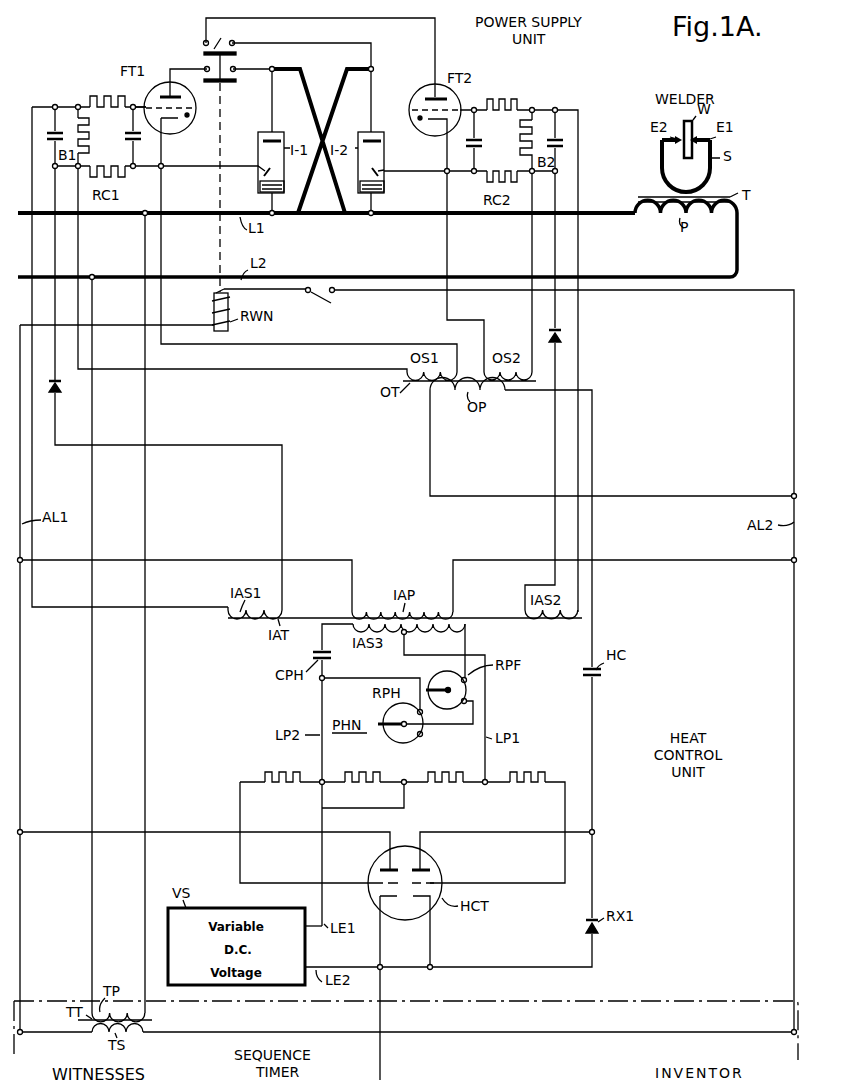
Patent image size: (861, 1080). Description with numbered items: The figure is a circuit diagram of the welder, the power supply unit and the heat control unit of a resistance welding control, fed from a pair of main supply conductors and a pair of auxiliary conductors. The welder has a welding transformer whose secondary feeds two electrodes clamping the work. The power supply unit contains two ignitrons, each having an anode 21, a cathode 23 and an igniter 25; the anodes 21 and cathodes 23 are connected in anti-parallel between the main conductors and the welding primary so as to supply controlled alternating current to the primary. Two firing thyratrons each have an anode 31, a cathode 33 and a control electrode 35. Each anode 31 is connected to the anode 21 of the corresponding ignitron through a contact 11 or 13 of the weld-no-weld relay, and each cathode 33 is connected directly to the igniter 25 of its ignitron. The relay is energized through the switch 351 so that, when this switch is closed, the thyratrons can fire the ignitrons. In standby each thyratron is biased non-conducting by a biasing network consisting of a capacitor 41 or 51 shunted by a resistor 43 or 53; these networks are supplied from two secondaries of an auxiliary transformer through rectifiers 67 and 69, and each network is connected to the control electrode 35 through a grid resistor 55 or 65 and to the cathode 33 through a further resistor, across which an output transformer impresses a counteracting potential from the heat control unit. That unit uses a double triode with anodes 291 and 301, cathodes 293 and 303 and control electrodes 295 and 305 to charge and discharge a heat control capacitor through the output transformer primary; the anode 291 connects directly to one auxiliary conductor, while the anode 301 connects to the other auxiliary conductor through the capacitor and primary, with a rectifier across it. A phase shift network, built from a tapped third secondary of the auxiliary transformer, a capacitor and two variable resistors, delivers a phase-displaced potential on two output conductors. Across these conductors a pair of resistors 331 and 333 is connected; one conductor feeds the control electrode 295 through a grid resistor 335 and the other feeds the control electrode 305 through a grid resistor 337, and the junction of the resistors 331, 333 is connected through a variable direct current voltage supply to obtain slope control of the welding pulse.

The contact of weld-no-weld relay 11 is at (214, 47).
The contact of weld-no-weld relay 13 is at (236, 80).
The ignitron anode 21 is at (265, 137).
The ignitron cathode 23 is at (260, 189).
The ignitron igniter 25 is at (262, 176).
The thyratron anode 31 is at (168, 94).
The thyratron cathode 33 is at (178, 122).
The thyratron control electrode 35 is at (181, 100).
The capacitor 41 is at (52, 130).
The resistor 43 is at (90, 145).
The capacitor 51 is at (556, 138).
The resistor 53 is at (520, 139).
The grid resistor 55 is at (90, 97).
The grid resistor 65 is at (513, 101).
The rectifier 67 is at (60, 388).
The rectifier 69 is at (562, 338).
The switch 351 is at (320, 300).
The anode of double triode 291 is at (383, 866).
The cathode of double triode 293 is at (378, 893).
The control electrode of double triode 295 is at (372, 880).
The anode of double triode 301 is at (425, 866).
The cathode of double triode 303 is at (417, 899).
The control electrode of double triode 305 is at (436, 882).
The resistor 331 is at (345, 773).
The resistor 333 is at (428, 773).
The grid resistor 335 is at (300, 773).
The grid resistor 337 is at (510, 773).